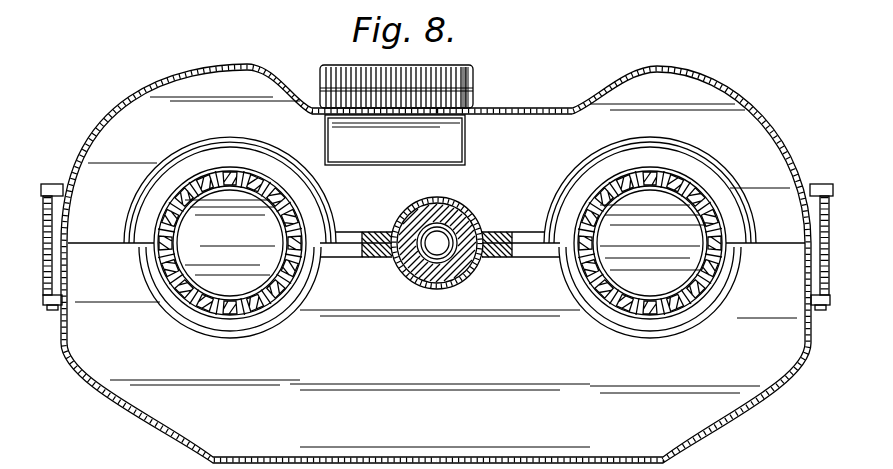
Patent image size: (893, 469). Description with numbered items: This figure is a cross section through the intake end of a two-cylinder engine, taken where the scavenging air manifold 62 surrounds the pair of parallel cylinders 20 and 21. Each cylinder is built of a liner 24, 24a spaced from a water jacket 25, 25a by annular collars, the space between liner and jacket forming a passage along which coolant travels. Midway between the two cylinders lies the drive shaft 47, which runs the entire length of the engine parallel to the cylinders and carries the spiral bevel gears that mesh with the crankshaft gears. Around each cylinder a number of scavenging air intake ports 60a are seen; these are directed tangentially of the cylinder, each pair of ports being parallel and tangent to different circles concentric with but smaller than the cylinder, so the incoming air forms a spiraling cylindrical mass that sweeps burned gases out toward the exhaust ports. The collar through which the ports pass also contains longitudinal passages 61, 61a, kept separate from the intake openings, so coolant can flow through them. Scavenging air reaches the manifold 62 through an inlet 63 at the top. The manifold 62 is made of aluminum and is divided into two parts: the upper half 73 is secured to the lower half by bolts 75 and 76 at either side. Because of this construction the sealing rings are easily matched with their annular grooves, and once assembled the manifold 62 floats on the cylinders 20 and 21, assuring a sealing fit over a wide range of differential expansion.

The cylinder 20 is at (645, 315).
The cylinder 21 is at (237, 322).
The liner 24 is at (652, 237).
The liner 24a is at (230, 237).
The water jacket 25 is at (650, 167).
The water jacket 25a is at (229, 176).
The drive shaft 47 is at (470, 213).
The scavenging air intake port 60a is at (230, 322).
The longitudinal passage 61 is at (665, 213).
The longitudinal passage 61a is at (258, 216).
The scavenging air manifold 62 is at (746, 88).
The inlet 63 is at (462, 66).
The upper half of the manifold 73 is at (137, 96).
The bolt 75 is at (58, 184).
The bolt 76 is at (820, 184).